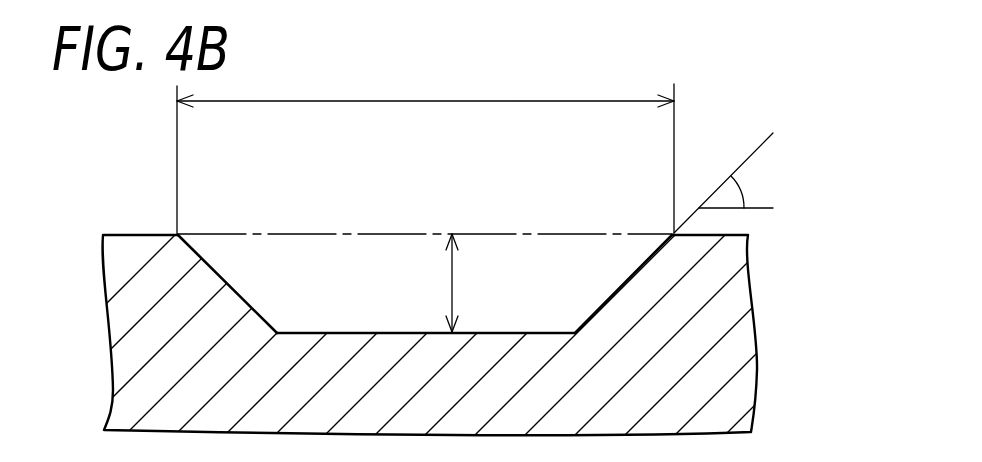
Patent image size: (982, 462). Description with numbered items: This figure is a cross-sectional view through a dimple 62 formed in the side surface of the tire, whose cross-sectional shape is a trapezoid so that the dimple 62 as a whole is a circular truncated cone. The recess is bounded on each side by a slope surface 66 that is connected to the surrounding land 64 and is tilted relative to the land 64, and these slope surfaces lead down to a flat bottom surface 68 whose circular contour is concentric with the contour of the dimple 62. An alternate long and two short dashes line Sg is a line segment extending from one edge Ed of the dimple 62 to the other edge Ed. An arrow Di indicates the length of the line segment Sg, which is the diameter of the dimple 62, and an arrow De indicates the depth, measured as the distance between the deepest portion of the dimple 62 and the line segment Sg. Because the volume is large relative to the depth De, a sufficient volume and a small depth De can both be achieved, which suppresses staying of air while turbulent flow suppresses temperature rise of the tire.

The land 64 is at (140, 233).
The slope surface 66 is at (243, 296).
The dimple 62 is at (372, 330).
The bottom surface 68 is at (508, 332).
The edge Ed is at (179, 234).
The line segment Sg is at (391, 233).
The diameter Di is at (425, 155).
The depth De is at (462, 283).